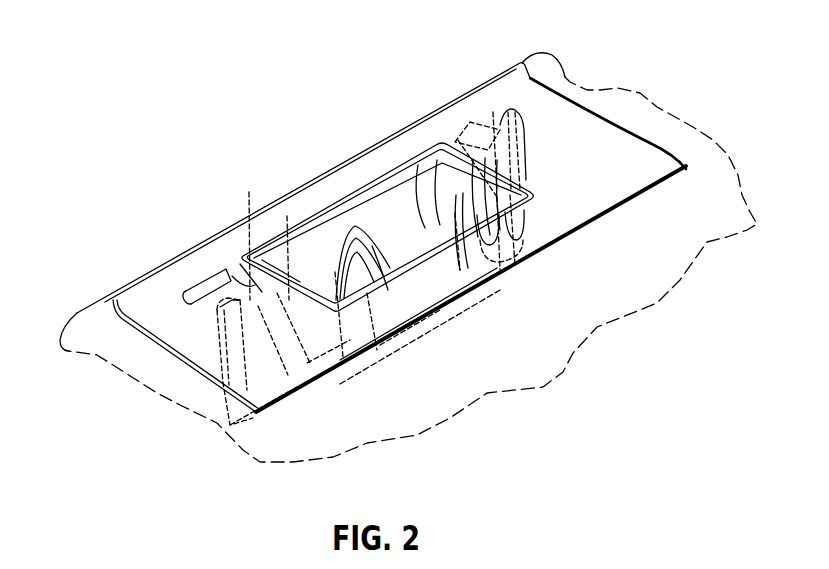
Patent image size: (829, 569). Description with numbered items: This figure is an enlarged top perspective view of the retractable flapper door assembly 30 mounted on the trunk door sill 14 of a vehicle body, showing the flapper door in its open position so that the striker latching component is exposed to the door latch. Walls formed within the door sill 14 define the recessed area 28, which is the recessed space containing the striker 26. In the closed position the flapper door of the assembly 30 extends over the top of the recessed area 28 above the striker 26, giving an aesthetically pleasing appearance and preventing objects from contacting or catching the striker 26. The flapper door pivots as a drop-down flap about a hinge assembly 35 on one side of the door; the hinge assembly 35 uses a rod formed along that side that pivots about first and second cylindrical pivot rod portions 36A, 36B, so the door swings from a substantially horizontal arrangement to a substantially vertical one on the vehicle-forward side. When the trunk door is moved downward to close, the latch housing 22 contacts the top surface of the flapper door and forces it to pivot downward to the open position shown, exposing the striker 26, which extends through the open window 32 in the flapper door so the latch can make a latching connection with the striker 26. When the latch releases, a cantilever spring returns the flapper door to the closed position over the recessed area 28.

The trunk door sill 14 is at (550, 78).
The latch housing 22 is at (224, 260).
The striker 26 is at (383, 255).
The recessed area 28 is at (450, 190).
The retractable flapper door assembly 30 is at (421, 188).
The open window 32 is at (407, 313).
The hinge assembly 35 is at (177, 252).
The first cylindrical pivot rod portion 36A is at (220, 260).
The second cylindrical pivot rod portion 36B is at (487, 113).